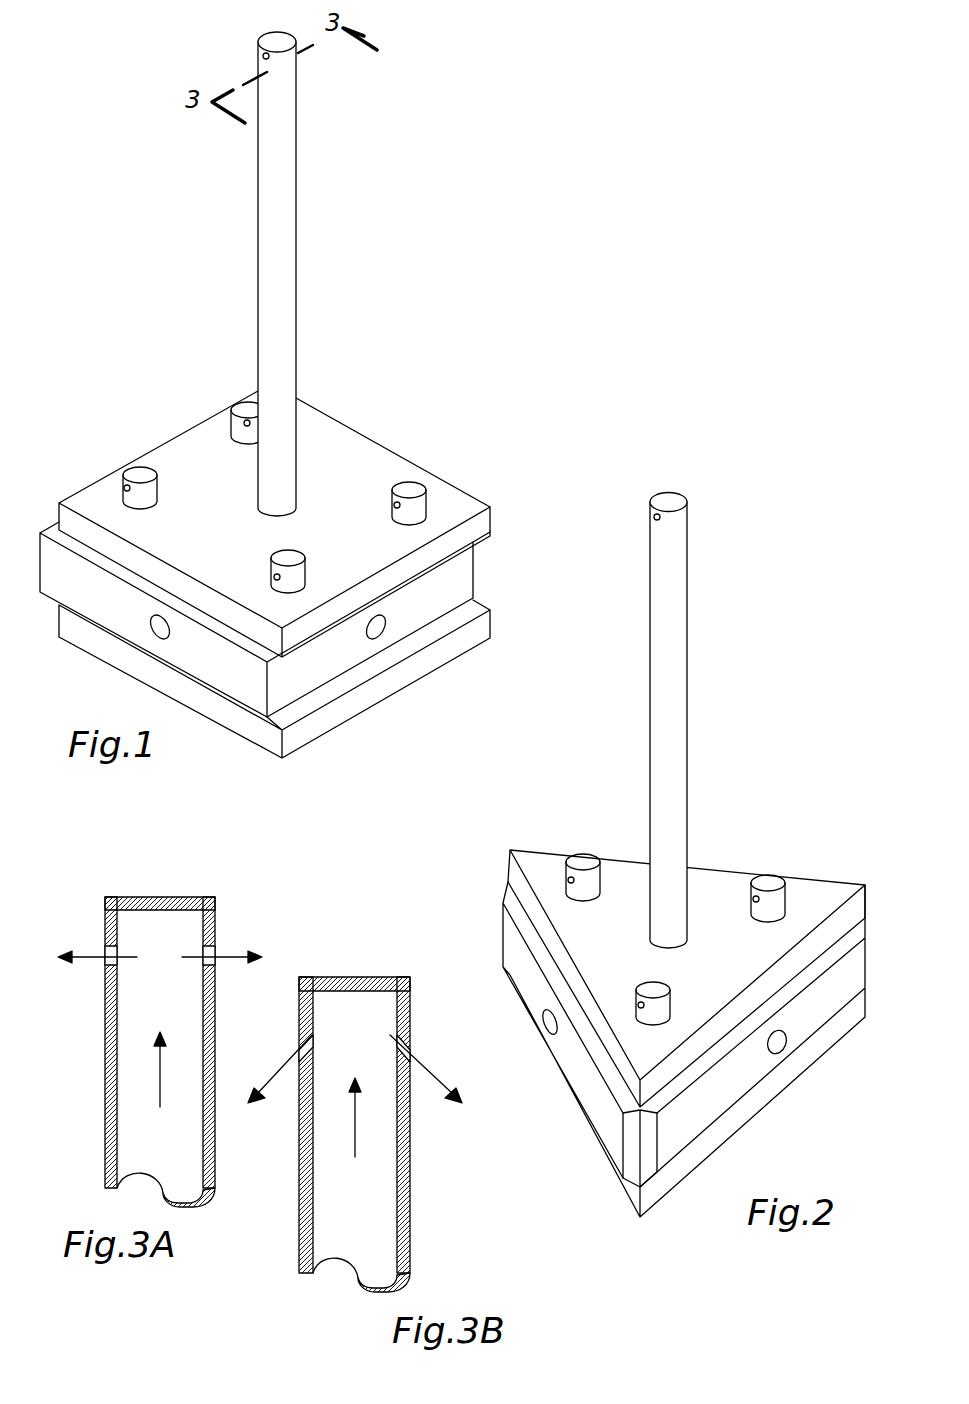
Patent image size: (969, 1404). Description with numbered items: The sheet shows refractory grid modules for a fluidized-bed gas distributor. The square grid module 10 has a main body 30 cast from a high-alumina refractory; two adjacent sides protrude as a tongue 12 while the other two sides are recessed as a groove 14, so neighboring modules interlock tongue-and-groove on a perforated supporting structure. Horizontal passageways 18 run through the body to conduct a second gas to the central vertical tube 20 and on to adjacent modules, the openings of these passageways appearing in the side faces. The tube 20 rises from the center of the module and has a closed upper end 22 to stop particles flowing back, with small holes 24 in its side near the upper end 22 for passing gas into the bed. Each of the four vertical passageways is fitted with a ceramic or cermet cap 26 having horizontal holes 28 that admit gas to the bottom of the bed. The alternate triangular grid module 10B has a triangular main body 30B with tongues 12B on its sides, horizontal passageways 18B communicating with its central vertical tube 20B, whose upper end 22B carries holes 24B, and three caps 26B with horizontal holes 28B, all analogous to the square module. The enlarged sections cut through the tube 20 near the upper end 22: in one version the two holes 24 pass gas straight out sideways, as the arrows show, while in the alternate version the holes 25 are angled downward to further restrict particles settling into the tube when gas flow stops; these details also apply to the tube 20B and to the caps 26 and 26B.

In FIG. 1, the square grid module 10 is at (392, 399).
In FIG. 1, the tongue 12 is at (73, 597).
In FIG. 1, the groove 14 is at (463, 567).
In FIG. 1, the horizontal passageways 18 is at (160, 623).
In FIG. 1, the vertical tube 20 is at (297, 272).
In FIG. 3A, the vertical tube 20 is at (107, 1053).
In FIG. 3B, the vertical tube 20 is at (303, 1138).
In FIG. 1, the upper end 22 is at (275, 42).
In FIG. 3A, the upper end 22 is at (142, 897).
In FIG. 3B, the upper end 22 is at (337, 978).
In FIG. 1, the holes 24 is at (264, 55).
In FIG. 3A, the holes 24 is at (108, 947).
In FIG. 3B, the angled holes 25 is at (387, 1035).
In FIG. 1, the cap 26 is at (158, 477).
In FIG. 1, the horizontal holes 28 is at (127, 488).
In FIG. 1, the main body 30 is at (193, 443).
In FIG. 2, the triangular grid module 10B is at (831, 807).
In FIG. 2, the tongue 12B is at (510, 938).
In FIG. 2, the horizontal passageways 18B is at (543, 1017).
In FIG. 2, the vertical tube 20B is at (688, 735).
In FIG. 2, the upper end 22B is at (667, 502).
In FIG. 2, the holes 24B is at (655, 514).
In FIG. 2, the cap 26B is at (592, 854).
In FIG. 2, the horizontal holes 28B is at (571, 880).
In FIG. 2, the main body 30B is at (534, 866).